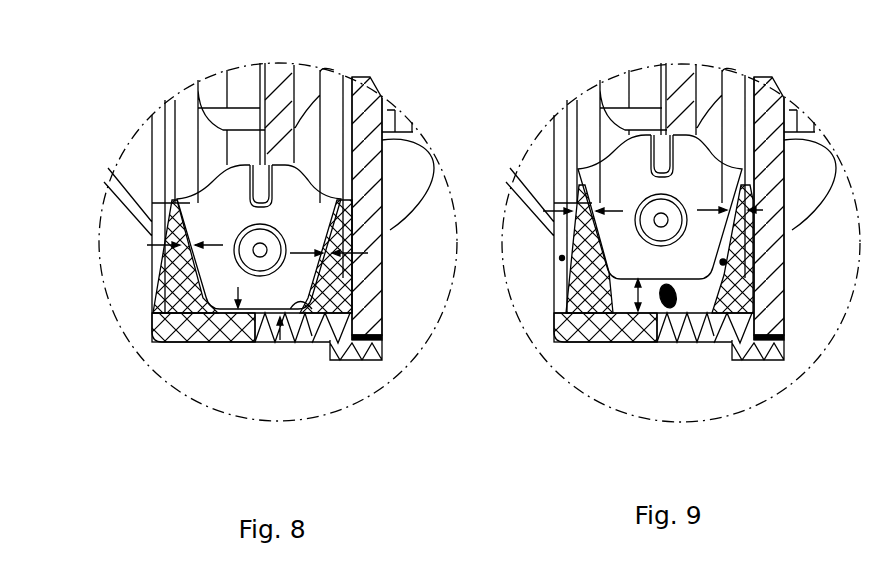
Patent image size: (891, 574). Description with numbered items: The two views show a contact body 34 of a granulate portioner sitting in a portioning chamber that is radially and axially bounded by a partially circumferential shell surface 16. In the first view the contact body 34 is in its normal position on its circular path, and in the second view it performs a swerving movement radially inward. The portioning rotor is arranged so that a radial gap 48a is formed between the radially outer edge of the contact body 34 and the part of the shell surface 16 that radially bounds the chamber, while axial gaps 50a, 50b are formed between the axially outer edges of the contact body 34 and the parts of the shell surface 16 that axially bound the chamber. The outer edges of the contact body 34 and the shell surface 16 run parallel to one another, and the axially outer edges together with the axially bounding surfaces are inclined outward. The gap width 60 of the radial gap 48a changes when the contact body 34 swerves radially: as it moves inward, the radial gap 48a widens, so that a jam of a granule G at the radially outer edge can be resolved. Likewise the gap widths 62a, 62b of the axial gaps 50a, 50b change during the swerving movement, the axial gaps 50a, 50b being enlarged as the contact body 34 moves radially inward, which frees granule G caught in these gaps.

In FIG. 8, the shell surface 16 is at (316, 340).
In FIG. 9, the shell surface 16 is at (715, 288).
In FIG. 8, the contact body 34 is at (312, 232).
In FIG. 9, the contact body 34 is at (715, 215).
In FIG. 8, the radial gap 48a is at (266, 343).
In FIG. 9, the radial gap 48a is at (713, 343).
In FIG. 8, the axial gap 50a is at (190, 278).
In FIG. 9, the axial gap 50a is at (591, 243).
In FIG. 8, the axial gap 50b is at (338, 276).
In FIG. 9, the axial gap 50b is at (726, 263).
In FIG. 8, the gap width 60 is at (208, 343).
In FIG. 9, the gap width 60 is at (592, 280).
In FIG. 8, the gap width 62a is at (167, 233).
In FIG. 9, the gap width 62a is at (540, 211).
In FIG. 8, the gap width 62b is at (335, 251).
In FIG. 9, the gap width 62b is at (752, 205).
In FIG. 9, the granule G is at (890, 195).